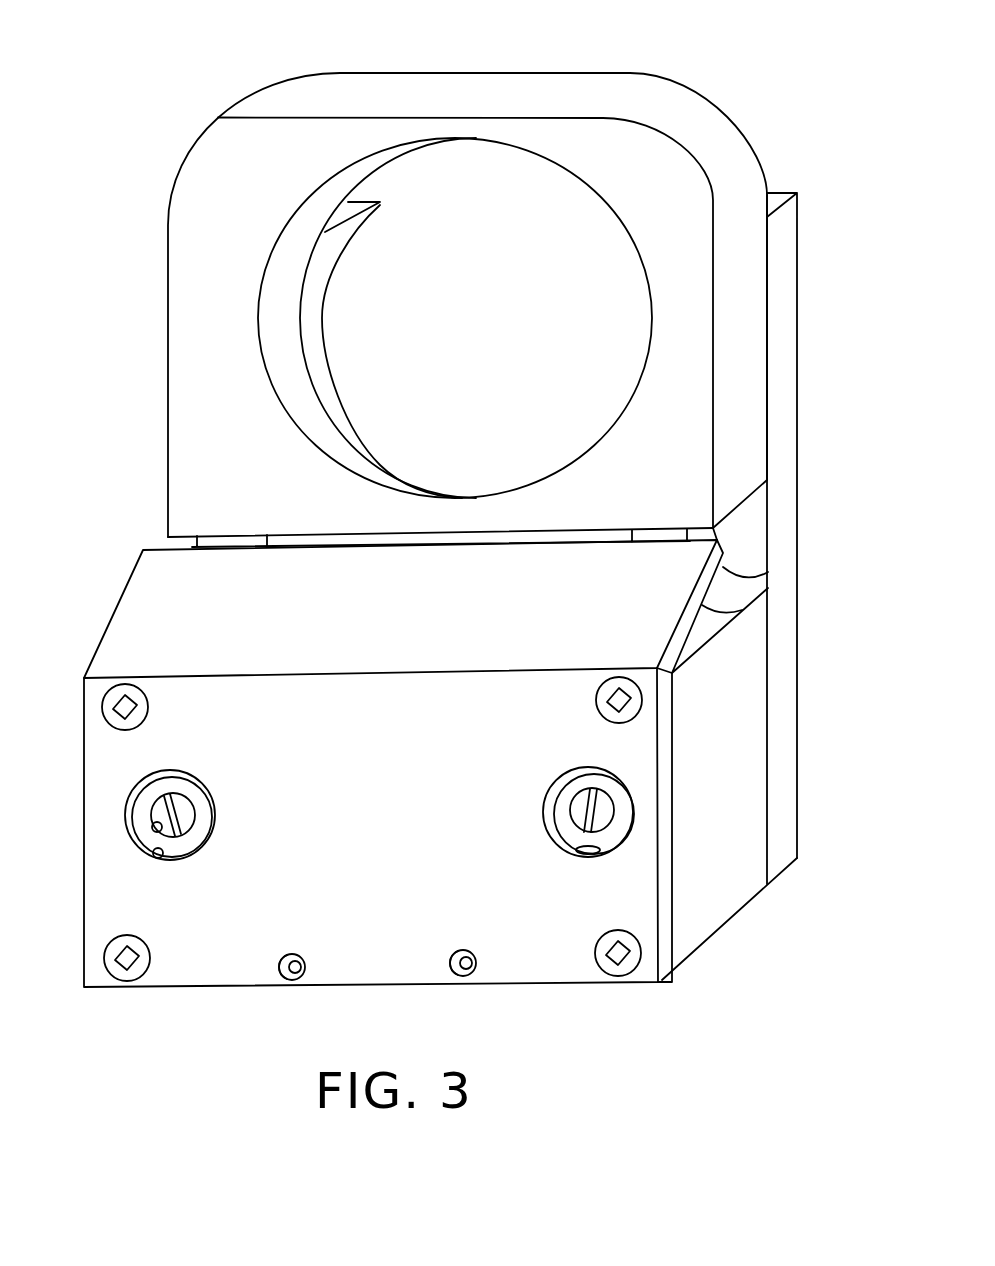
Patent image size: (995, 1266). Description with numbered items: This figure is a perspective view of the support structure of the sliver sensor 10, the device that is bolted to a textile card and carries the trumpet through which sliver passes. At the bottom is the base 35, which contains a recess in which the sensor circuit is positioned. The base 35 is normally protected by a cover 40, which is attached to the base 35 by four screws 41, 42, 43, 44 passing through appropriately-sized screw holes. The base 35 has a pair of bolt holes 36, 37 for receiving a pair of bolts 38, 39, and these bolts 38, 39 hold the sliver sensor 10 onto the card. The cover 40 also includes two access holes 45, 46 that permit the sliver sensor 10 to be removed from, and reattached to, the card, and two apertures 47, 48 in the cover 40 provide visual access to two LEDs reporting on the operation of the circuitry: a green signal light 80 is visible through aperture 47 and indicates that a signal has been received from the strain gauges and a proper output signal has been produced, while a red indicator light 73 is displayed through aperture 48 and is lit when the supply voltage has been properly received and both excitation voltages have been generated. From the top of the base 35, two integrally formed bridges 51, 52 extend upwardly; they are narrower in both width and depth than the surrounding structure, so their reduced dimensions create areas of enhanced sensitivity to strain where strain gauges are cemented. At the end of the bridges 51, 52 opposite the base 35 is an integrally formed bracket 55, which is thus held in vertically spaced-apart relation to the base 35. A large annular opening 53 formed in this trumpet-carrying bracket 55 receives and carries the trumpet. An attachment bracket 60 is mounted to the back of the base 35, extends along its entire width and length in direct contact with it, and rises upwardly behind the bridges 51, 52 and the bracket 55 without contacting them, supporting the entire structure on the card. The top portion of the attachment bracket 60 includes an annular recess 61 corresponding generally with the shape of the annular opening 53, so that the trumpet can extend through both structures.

The sliver sensor 10 is at (185, 86).
The bracket 55 is at (596, 125).
The annular recess 61 is at (307, 318).
The annular opening 53 is at (283, 387).
The attachment bracket 60 is at (782, 423).
The bridge 51 is at (193, 545).
The bridge 52 is at (753, 583).
The base 35 is at (750, 692).
The cover 40 is at (542, 937).
The screw 41 is at (110, 709).
The screw 42 is at (633, 703).
The screw 43 is at (640, 957).
The screw 44 is at (113, 970).
The bolt hole 36 is at (153, 830).
The bolt hole 37 is at (572, 818).
The bolt 38 is at (155, 811).
The bolt 39 is at (607, 800).
The access hole 45 is at (160, 858).
The access hole 46 is at (600, 852).
The aperture 47 is at (277, 975).
The aperture 48 is at (452, 975).
The green signal light 80 is at (298, 975).
The red indicator light 73 is at (472, 975).